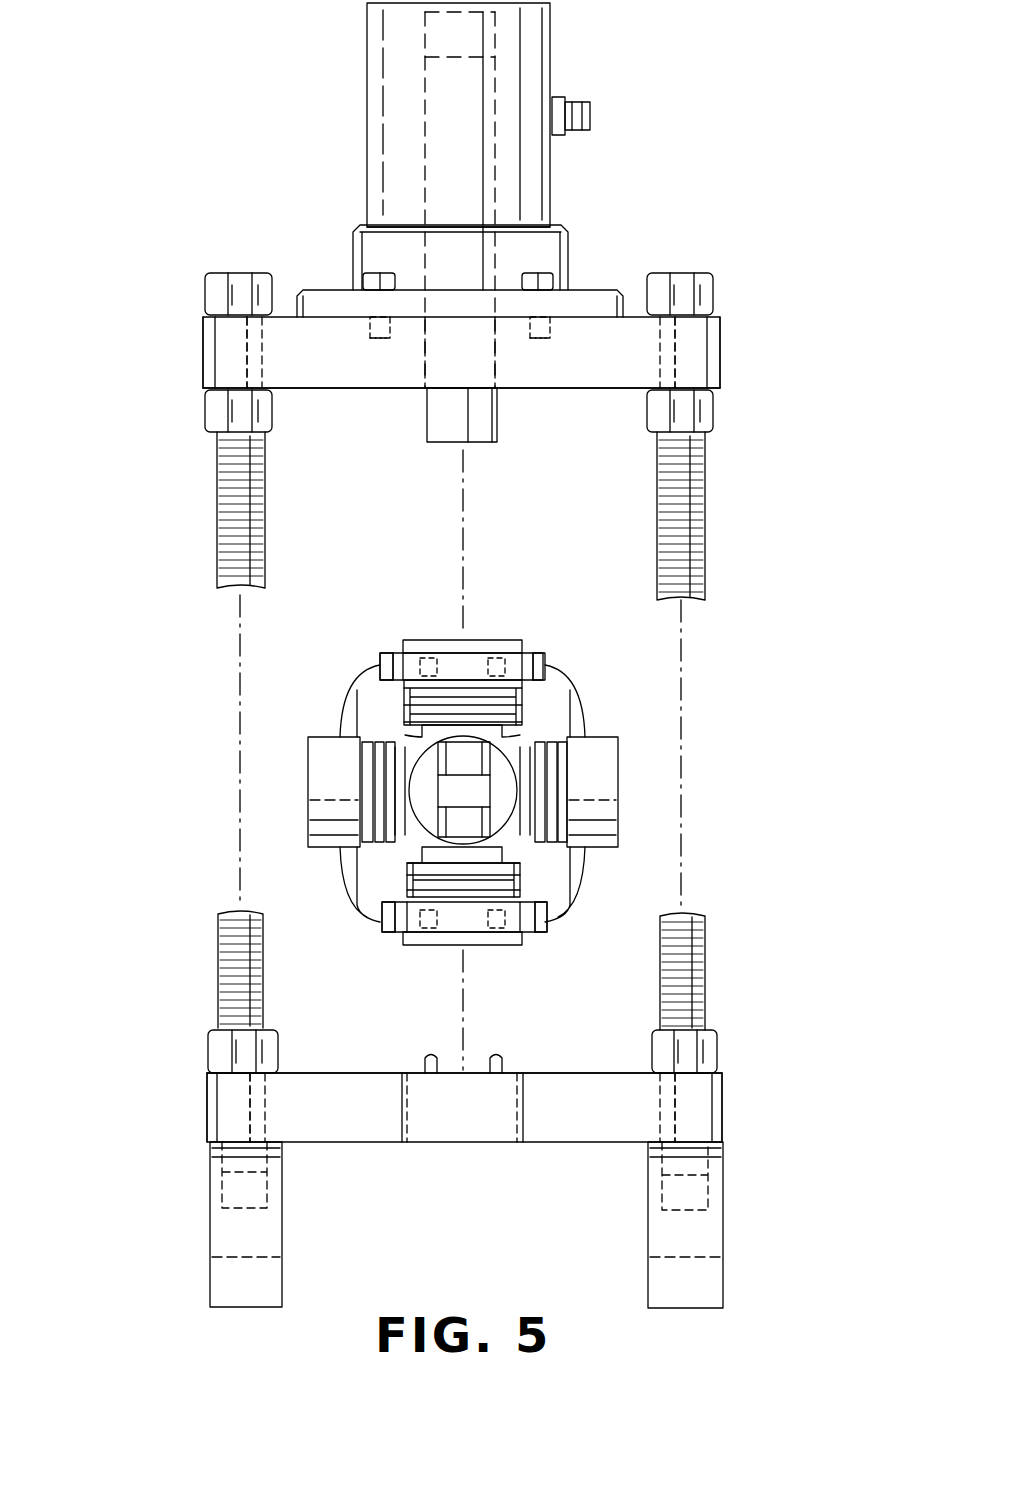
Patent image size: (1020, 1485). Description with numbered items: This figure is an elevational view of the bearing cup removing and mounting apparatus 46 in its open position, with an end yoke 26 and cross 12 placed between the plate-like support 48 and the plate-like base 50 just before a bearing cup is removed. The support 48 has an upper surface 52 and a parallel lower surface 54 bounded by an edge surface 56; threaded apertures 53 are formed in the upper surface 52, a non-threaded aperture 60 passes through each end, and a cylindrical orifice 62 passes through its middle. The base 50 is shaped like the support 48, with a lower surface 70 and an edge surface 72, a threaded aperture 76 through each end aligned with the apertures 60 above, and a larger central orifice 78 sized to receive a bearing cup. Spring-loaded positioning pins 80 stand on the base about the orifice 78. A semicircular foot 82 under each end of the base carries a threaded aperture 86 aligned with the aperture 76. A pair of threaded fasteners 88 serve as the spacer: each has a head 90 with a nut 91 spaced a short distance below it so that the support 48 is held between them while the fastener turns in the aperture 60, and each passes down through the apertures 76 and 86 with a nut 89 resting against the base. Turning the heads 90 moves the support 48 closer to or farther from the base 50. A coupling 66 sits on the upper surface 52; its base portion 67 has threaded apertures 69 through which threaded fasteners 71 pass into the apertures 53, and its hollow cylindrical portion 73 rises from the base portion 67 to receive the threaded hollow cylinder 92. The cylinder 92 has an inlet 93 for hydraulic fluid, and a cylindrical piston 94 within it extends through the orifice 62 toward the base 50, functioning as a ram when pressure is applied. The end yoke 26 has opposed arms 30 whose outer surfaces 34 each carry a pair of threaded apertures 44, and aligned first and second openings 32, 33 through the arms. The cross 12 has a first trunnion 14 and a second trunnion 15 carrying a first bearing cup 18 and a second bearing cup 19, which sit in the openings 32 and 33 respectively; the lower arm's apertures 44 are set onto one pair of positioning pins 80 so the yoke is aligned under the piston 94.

The cross 12 is at (448, 806).
The first trunnion 14 is at (420, 730).
The second trunnion 15 is at (425, 853).
The first bearing cup 18 is at (470, 640).
The second bearing cup 19 is at (445, 948).
The end yoke 26 is at (585, 730).
The arms 30 is at (548, 672).
The first opening 32 is at (545, 660).
The second opening 33 is at (540, 940).
The outer surface 34 is at (385, 662).
The threaded apertures 44 is at (425, 655).
The apparatus 46 is at (712, 88).
The support 48 is at (200, 338).
The base 50 is at (205, 1128).
The upper surface 52 is at (640, 315).
The threaded apertures 53 is at (375, 330).
The lower surface 54 is at (630, 390).
The edge surface 56 is at (722, 335).
The non-threaded aperture 60 is at (215, 362).
The orifice 62 is at (425, 358).
The coupling 66 is at (573, 250).
The base portion 67 is at (610, 295).
The threaded apertures 69 is at (345, 300).
The lower surface 70 is at (592, 1142).
The threaded fasteners 71 is at (372, 270).
The edge surface 72 is at (725, 1118).
The cylindrical portion 73 is at (383, 248).
The threaded aperture 76 is at (215, 1092).
The orifice 78 is at (405, 1118).
The positioning pins 80 is at (425, 1060).
The foot 82 is at (207, 1245).
The threaded aperture 86 is at (268, 1182).
The threaded fasteners 88 is at (230, 545).
The nut 89 is at (215, 1043).
The head 90 is at (232, 295).
The nut 91 is at (210, 425).
The cylinder 92 is at (530, 65).
The inlet 93 is at (585, 110).
The piston 94 is at (445, 433).